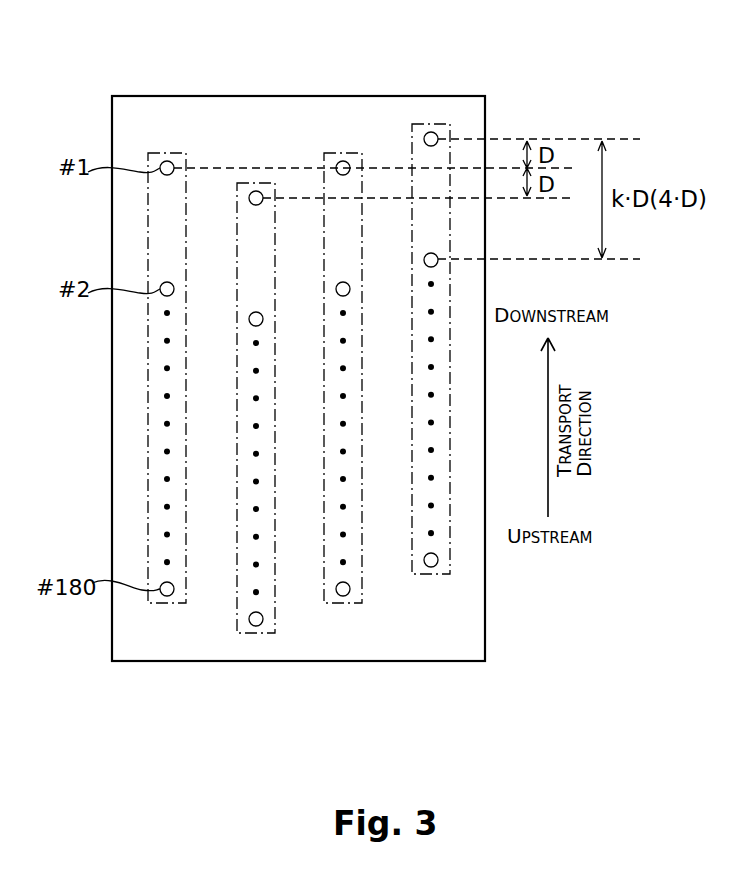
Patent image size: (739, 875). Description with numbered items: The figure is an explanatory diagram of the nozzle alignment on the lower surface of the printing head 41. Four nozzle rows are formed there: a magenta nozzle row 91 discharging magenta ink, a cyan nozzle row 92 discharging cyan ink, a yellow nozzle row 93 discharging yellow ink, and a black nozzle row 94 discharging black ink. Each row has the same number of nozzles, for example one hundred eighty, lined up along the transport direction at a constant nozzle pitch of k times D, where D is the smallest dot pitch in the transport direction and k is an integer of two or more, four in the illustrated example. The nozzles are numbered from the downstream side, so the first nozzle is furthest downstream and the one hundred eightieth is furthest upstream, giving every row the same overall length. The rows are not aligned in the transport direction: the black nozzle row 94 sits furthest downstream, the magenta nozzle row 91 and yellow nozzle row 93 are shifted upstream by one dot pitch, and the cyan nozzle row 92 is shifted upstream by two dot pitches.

The printing head 41 is at (300, 96).
The magenta nozzle row 91 is at (167, 597).
The cyan nozzle row 92 is at (256, 627).
The yellow nozzle row 93 is at (343, 597).
The black nozzle row 94 is at (431, 568).